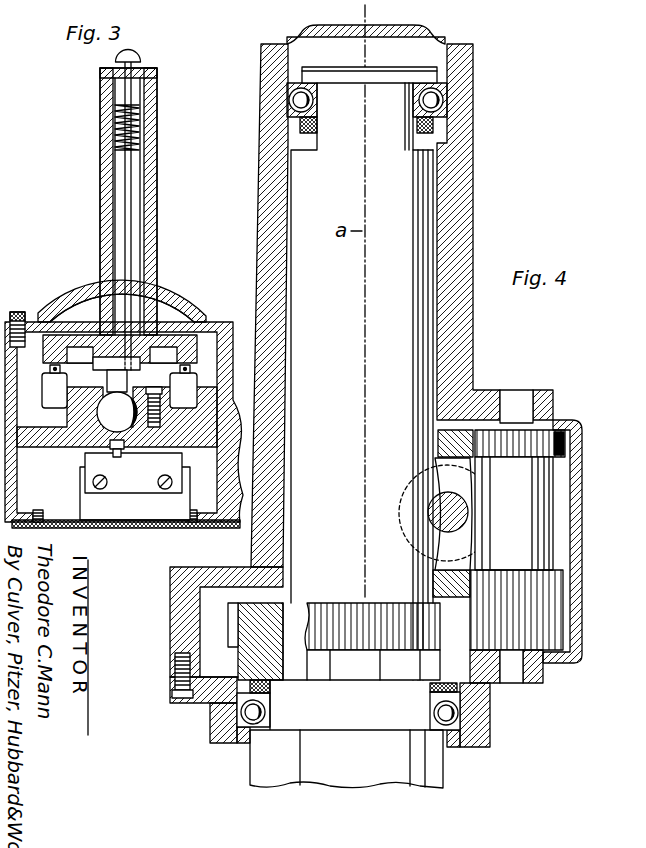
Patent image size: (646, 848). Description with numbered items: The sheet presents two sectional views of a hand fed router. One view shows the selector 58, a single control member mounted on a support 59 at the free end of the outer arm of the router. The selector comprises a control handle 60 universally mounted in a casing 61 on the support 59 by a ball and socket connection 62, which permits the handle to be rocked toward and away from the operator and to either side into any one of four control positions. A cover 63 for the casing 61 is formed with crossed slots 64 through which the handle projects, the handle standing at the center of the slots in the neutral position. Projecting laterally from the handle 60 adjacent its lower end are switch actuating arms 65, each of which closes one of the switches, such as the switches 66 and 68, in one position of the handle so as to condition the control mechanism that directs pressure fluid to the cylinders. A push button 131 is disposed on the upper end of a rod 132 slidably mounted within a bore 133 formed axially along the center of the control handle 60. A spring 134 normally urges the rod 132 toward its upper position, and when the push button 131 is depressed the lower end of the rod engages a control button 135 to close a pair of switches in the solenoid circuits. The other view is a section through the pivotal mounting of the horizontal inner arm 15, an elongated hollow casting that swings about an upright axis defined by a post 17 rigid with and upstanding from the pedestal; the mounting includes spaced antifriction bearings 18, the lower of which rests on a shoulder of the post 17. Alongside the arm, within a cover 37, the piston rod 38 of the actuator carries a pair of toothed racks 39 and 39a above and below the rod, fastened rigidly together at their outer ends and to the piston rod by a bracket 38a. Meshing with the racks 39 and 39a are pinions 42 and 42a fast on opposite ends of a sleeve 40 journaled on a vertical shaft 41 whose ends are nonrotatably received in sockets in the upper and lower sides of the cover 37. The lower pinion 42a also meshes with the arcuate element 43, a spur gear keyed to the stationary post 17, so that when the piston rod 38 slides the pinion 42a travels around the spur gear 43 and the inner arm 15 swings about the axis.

In FIG. 3, the push button 131 is at (141, 55).
In FIG. 3, the rod 132 is at (132, 75).
In FIG. 3, the spring 134 is at (140, 131).
In FIG. 3, the control handle 60 is at (157, 162).
In FIG. 3, the selector 58 is at (95, 206).
In FIG. 3, the bore 133 is at (128, 211).
In FIG. 3, the crossed slots 64 is at (153, 298).
In FIG. 3, the cover 63 is at (200, 314).
In FIG. 3, the casing 61 is at (233, 345).
In FIG. 3, the switch actuating arms 65 is at (66, 352).
In FIG. 3, the switch 68 is at (44, 388).
In FIG. 3, the ball and socket connection 62 is at (90, 419).
In FIG. 3, the switch 66 is at (196, 403).
In FIG. 3, the control button 135 is at (117, 455).
In FIG. 3, the support 59 is at (229, 528).
In FIG. 4, the antifriction bearings 18 is at (443, 99).
In FIG. 4, the inner arm 15 is at (469, 170).
In FIG. 4, the post 17 is at (421, 238).
In FIG. 4, the toothed rack 39 is at (436, 443).
In FIG. 4, the piston rod 38 is at (450, 500).
In FIG. 4, the bracket 38a is at (471, 548).
In FIG. 4, the toothed rack 39a is at (432, 583).
In FIG. 4, the arcuate element 43 is at (352, 613).
In FIG. 4, the pinion 42 is at (558, 445).
In FIG. 4, the cover 37 is at (583, 490).
In FIG. 4, the sleeve 40 is at (548, 525).
In FIG. 4, the lower pinion 42a is at (558, 623).
In FIG. 4, the vertical shaft 41 is at (513, 684).